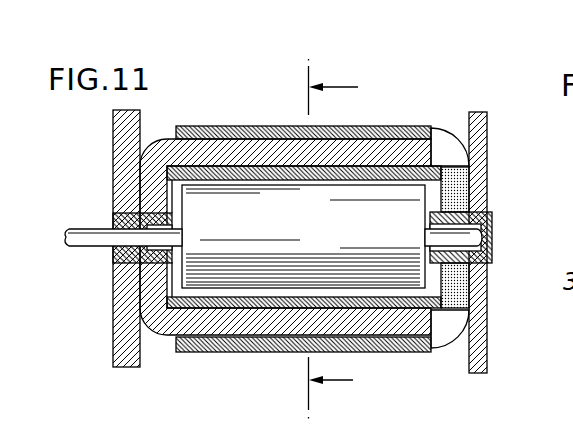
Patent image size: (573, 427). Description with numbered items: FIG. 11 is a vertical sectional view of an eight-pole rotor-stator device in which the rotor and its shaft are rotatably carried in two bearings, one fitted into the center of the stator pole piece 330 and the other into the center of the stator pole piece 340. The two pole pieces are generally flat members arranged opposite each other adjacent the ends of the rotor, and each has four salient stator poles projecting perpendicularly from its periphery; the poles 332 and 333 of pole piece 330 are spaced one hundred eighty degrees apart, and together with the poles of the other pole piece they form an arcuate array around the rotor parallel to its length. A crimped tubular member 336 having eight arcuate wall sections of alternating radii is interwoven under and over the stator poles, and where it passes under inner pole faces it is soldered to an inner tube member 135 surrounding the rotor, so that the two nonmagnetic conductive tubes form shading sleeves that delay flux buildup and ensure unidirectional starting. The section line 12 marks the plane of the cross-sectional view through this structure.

The section line 12- 12 is at (353, 239).
The inner tube member 135 is at (337, 172).
The stator pole piece 330 is at (158, 337).
The salient stator pole 332 is at (400, 150).
The salient stator pole 333 is at (392, 323).
The tubular member 336 is at (212, 128).
The stator pole piece 340 is at (462, 198).